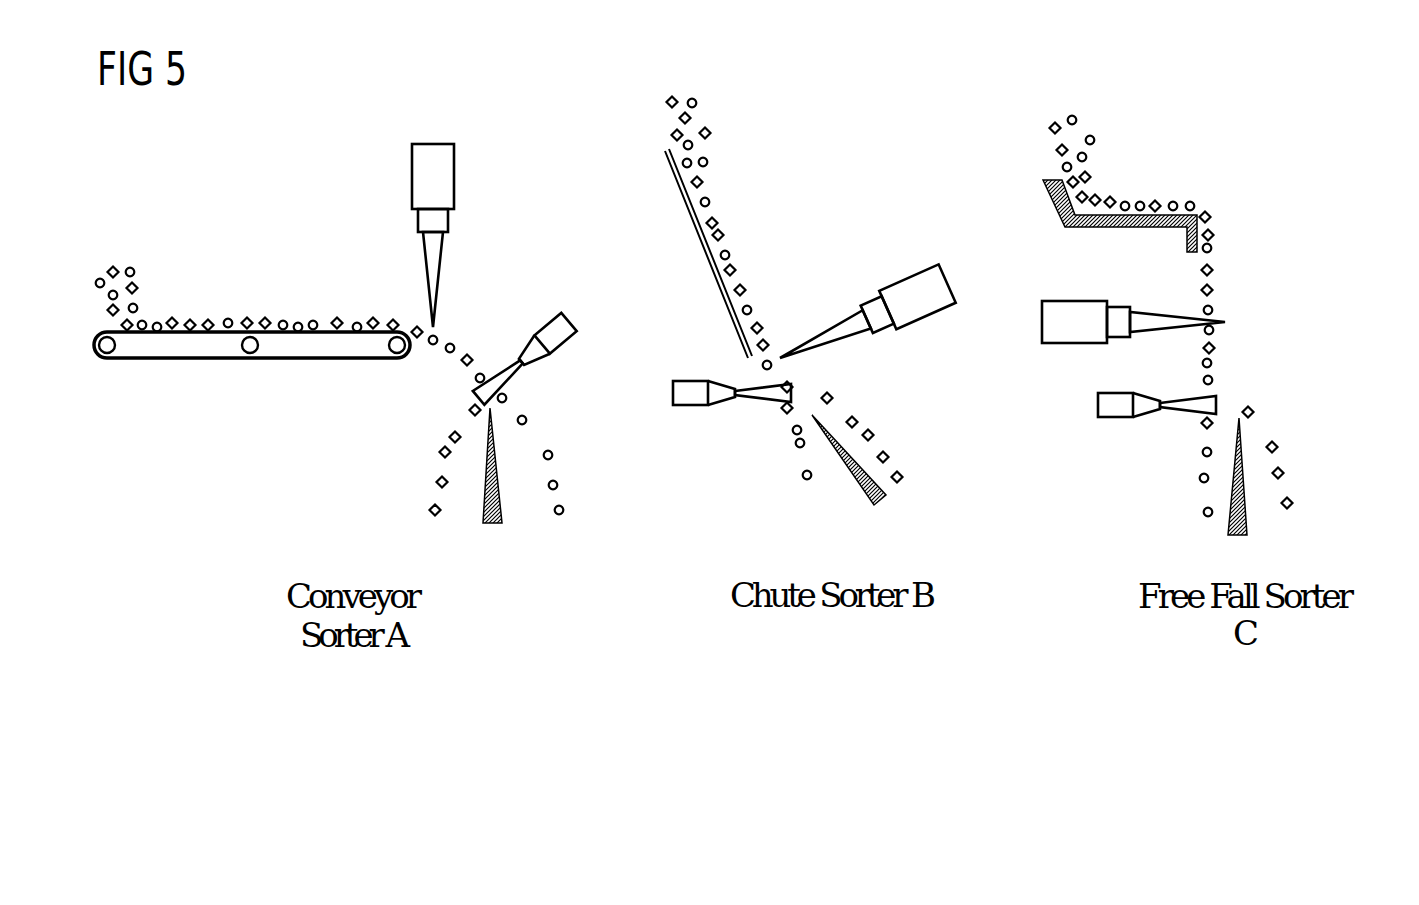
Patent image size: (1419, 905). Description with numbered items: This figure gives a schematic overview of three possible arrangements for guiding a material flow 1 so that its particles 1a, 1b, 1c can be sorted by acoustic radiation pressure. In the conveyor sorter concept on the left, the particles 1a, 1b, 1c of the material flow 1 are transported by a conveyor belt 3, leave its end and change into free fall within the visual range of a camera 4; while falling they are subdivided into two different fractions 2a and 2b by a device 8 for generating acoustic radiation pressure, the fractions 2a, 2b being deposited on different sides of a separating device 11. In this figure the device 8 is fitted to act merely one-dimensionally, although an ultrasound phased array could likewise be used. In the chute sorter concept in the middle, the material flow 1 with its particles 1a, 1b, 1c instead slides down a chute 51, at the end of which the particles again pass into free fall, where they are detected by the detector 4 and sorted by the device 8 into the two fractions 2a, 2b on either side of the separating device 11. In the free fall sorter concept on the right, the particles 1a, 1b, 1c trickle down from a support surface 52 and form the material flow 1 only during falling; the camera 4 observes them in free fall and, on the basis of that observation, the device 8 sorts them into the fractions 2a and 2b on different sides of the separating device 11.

The material flow 1 is at (186, 320).
The particle 1a is at (297, 320).
The particle 1b is at (340, 320).
The particle 1c is at (390, 318).
The fraction 2a is at (436, 483).
The fraction 2b is at (564, 510).
The conveyor belt 3 is at (180, 360).
The camera 4 is at (446, 172).
The device for generating acoustic radiation pressure 8 is at (551, 318).
The separating device 11 is at (497, 525).
The chute 51 is at (690, 223).
The support surface 52 is at (1118, 228).